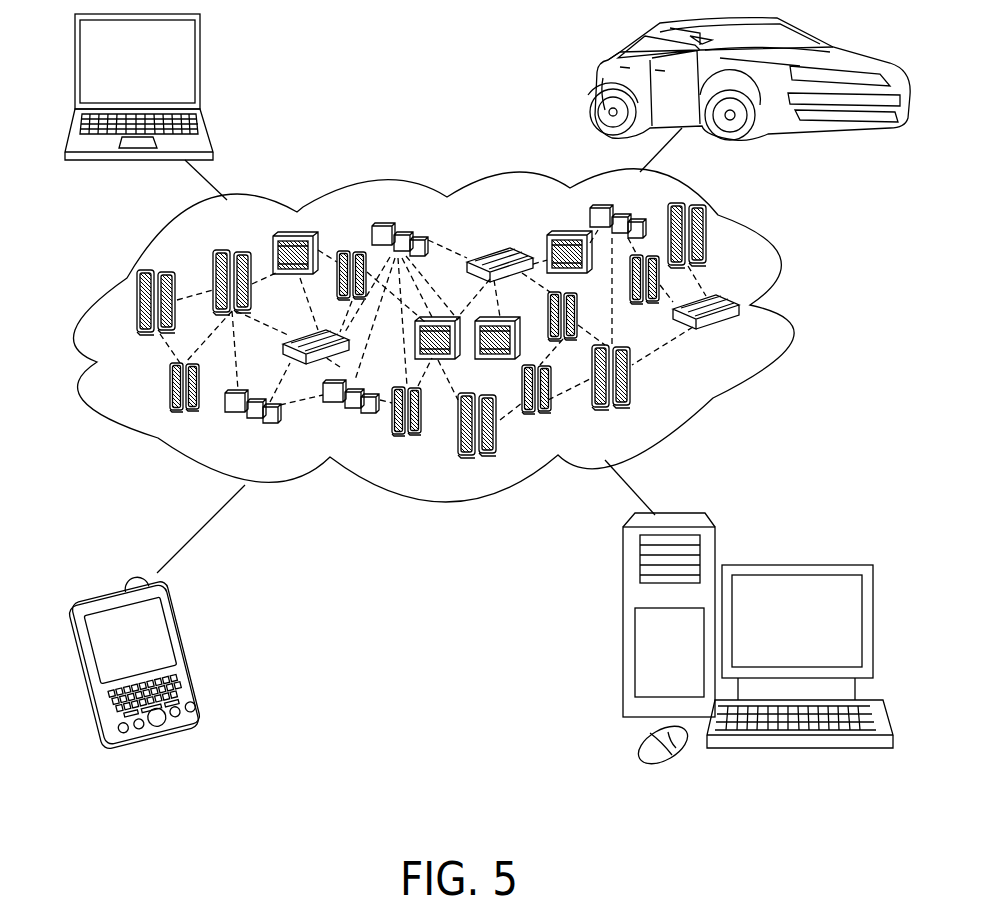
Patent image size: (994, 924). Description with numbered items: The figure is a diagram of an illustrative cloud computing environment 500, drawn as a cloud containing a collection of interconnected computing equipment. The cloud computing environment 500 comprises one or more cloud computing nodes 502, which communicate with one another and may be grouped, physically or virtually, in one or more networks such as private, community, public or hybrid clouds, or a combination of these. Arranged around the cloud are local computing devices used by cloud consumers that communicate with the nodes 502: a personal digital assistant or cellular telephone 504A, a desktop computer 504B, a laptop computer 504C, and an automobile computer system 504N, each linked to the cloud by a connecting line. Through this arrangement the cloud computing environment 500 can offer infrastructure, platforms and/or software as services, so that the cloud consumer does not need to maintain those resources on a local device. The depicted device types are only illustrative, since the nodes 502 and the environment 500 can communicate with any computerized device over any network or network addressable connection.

The cloud computing environment 500 is at (777, 293).
The cloud computing nodes 502 is at (743, 333).
The personal digital assistant (PDA) or cellular telephone 504A is at (180, 625).
The desktop computer 504B is at (785, 565).
The laptop computer 504C is at (203, 42).
The automobile computer system 504N is at (595, 82).